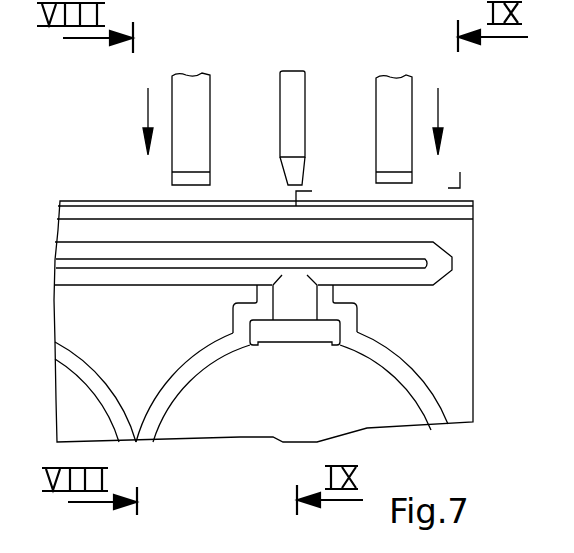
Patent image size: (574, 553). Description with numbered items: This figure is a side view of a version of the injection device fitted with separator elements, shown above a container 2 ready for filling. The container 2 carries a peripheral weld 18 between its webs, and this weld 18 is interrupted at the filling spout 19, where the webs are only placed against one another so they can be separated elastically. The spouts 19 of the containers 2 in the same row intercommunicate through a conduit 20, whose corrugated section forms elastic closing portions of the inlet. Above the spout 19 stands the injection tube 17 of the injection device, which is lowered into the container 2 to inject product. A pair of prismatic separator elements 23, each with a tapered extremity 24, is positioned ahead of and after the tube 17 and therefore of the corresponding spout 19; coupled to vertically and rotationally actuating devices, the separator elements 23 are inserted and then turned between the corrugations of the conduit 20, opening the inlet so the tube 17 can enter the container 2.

The container 2 is at (263, 307).
The injection tube 17 is at (293, 113).
The peripheral weld 18 is at (422, 377).
The filling spout 19 is at (290, 303).
The conduit 20 is at (107, 255).
The prismatic separator element 23 is at (180, 84).
The tapered extremity 24 is at (185, 182).